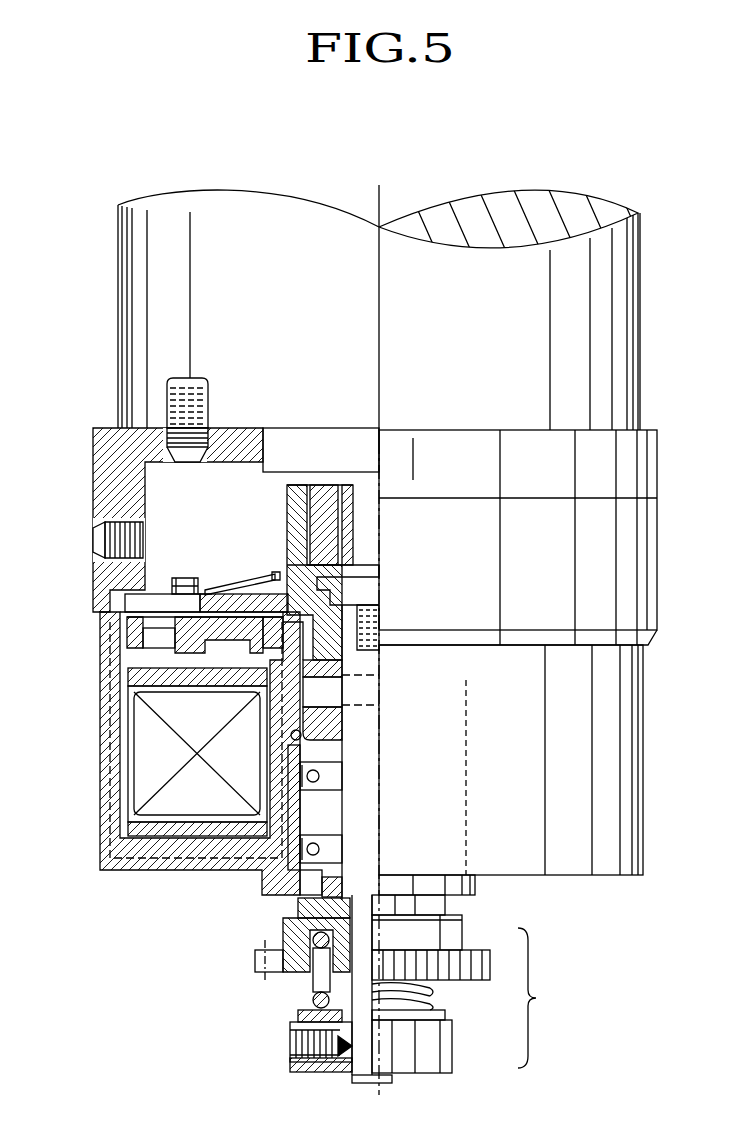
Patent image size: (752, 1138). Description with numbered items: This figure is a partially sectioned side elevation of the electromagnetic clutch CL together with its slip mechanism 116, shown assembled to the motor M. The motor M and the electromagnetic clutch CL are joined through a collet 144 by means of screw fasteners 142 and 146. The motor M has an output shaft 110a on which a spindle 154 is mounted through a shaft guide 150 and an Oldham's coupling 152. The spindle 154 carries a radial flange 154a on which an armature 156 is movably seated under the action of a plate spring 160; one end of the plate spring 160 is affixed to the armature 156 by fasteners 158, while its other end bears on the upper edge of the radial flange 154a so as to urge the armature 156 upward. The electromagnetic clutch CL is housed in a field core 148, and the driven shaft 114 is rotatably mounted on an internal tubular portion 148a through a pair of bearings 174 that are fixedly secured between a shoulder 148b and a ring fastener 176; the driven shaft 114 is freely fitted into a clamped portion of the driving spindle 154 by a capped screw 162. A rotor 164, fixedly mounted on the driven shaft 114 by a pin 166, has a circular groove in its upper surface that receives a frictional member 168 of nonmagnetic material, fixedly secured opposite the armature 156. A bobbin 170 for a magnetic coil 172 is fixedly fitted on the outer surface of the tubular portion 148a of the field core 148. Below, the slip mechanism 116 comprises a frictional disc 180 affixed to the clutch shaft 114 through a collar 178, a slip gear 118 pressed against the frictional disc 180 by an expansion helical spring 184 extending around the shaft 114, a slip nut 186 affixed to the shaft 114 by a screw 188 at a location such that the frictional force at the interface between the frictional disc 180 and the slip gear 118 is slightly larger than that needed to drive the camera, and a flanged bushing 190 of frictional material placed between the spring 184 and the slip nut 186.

The motor M is at (585, 314).
The electromagnetic clutch CL is at (600, 735).
The output shaft 110a is at (384, 518).
The driven shaft 114 is at (355, 815).
The slip mechanism 116 is at (475, 984).
The slip gear 118 is at (255, 962).
The screw fastener 142 is at (190, 450).
The collet 144 is at (100, 468).
The screw fastener 146 is at (100, 548).
The field core 148 is at (120, 640).
The internal tubular portion 148a is at (300, 765).
The shoulder 148b is at (300, 883).
The shaft guide 150 is at (348, 485).
The Oldham's coupling 152 is at (335, 555).
The spindle 154 is at (290, 515).
The radial flange 154a is at (275, 572).
The armature 156 is at (205, 590).
The fasteners 158 is at (180, 578).
The plate spring 160 is at (222, 586).
The capped screw 162 is at (360, 605).
The rotor 164 is at (127, 610).
The pin 166 is at (345, 690).
The frictional member 168 is at (227, 633).
The bobbin 170 is at (140, 680).
The magnetic coil 172 is at (150, 780).
The bearings 174 is at (330, 778).
The ring fastener 176 is at (302, 737).
The collar 178 is at (300, 906).
The frictional disc 180 is at (300, 932).
The expansion helical spring 184 is at (313, 990).
The slip nut 186 is at (292, 1068).
The screw 188 is at (292, 1048).
The flanged bushing 190 is at (300, 1016).